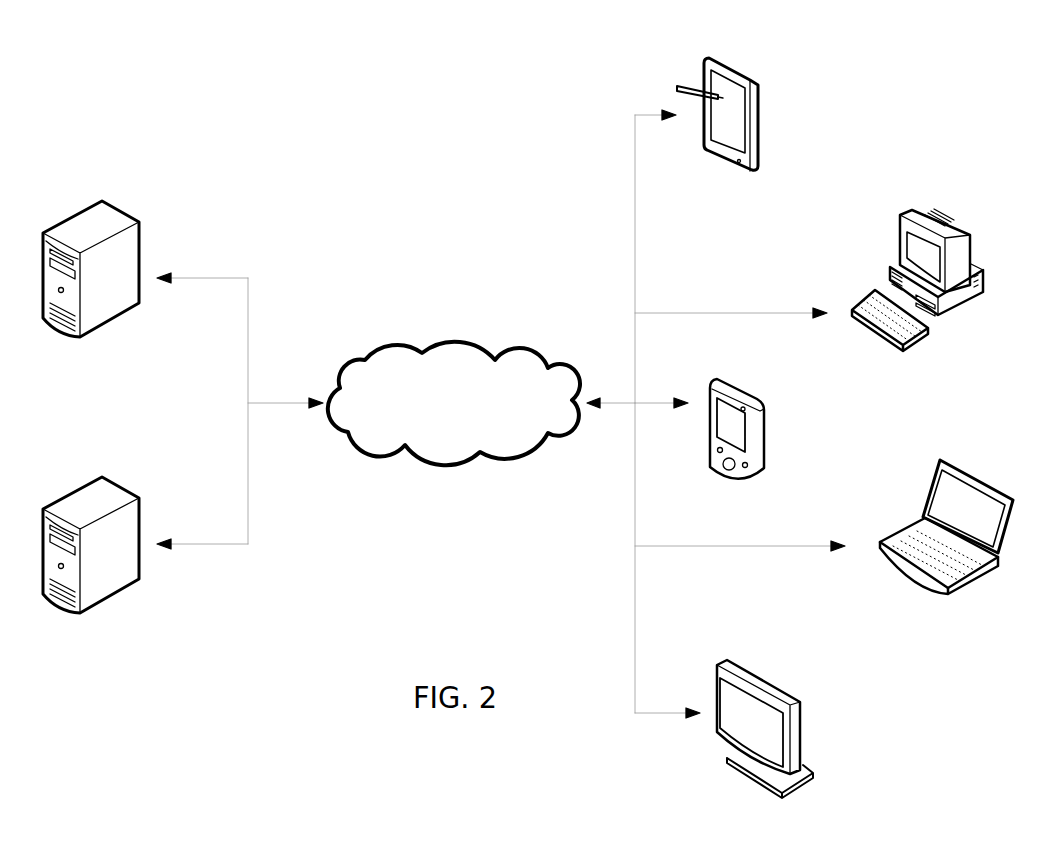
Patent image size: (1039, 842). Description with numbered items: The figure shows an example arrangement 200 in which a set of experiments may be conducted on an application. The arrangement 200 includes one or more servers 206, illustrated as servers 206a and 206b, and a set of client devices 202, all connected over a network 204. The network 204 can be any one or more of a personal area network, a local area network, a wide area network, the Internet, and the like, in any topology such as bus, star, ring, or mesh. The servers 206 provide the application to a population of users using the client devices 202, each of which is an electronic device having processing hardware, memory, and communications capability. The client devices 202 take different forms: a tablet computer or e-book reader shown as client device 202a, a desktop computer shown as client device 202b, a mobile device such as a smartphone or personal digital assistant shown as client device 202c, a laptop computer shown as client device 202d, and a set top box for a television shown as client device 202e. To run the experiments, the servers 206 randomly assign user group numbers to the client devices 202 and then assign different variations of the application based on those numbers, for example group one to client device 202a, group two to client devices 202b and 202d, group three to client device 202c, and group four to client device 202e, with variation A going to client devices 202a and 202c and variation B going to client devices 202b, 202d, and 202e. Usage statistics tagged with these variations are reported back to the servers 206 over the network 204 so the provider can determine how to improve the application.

The arrangement 200 is at (438, 103).
The client devices 202 is at (943, 40).
The client device 202a is at (717, 133).
The client device 202b is at (917, 295).
The client device 202c is at (737, 444).
The client device 202d is at (946, 543).
The client device 202e is at (765, 745).
The network 204 is at (454, 403).
The servers 206 is at (145, 51).
The server 206a is at (91, 289).
The server 206b is at (91, 567).